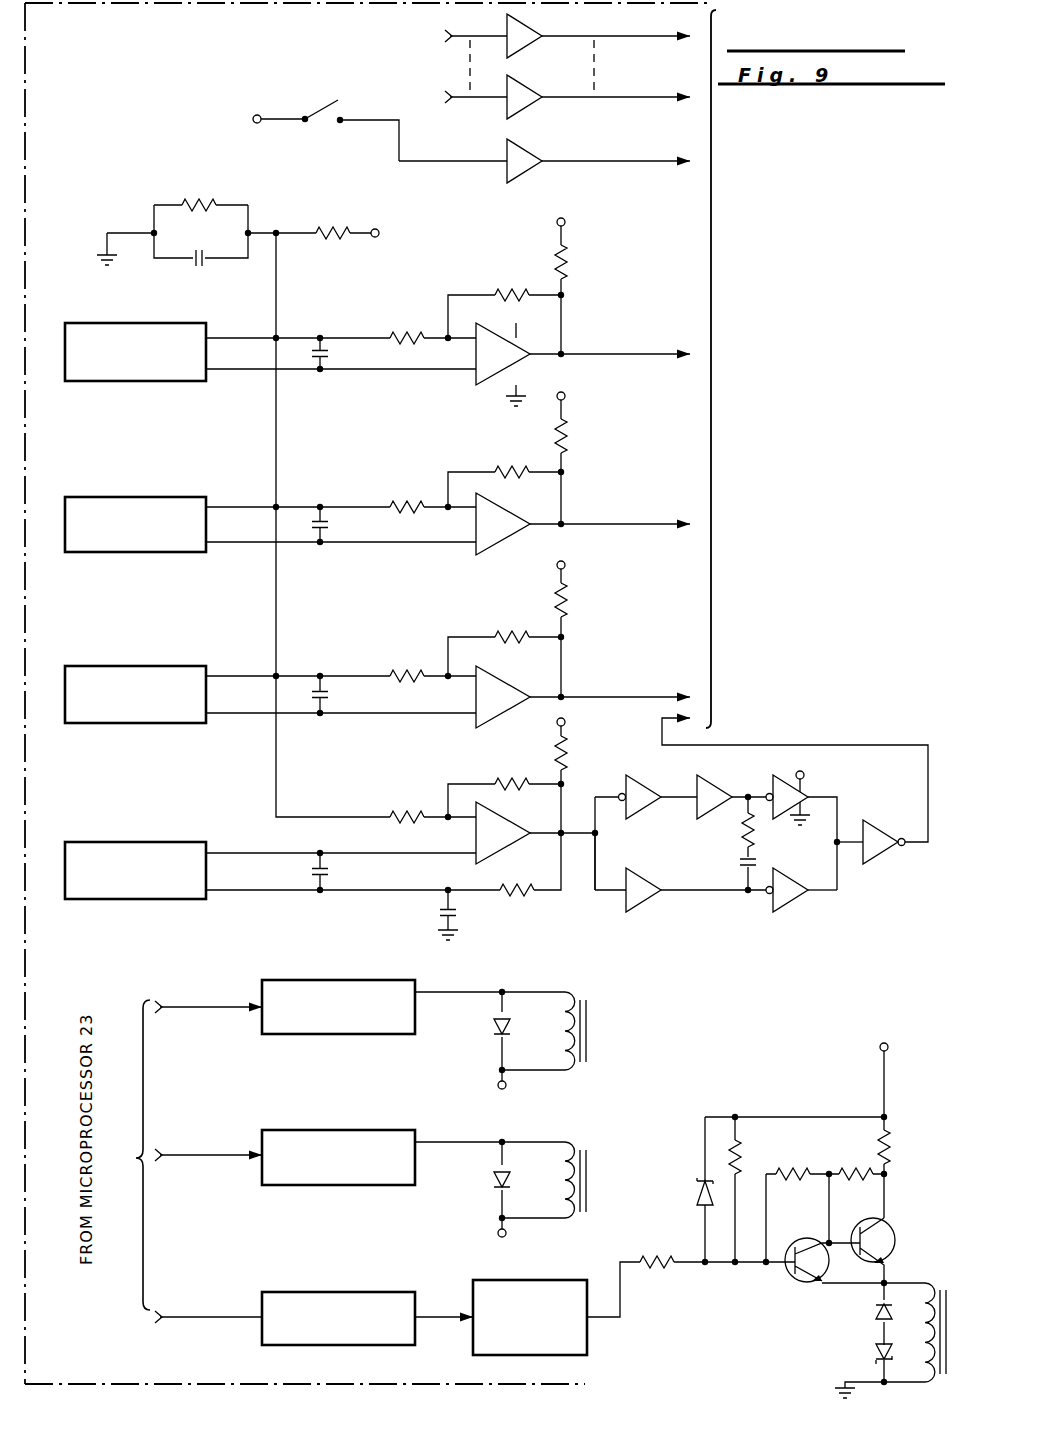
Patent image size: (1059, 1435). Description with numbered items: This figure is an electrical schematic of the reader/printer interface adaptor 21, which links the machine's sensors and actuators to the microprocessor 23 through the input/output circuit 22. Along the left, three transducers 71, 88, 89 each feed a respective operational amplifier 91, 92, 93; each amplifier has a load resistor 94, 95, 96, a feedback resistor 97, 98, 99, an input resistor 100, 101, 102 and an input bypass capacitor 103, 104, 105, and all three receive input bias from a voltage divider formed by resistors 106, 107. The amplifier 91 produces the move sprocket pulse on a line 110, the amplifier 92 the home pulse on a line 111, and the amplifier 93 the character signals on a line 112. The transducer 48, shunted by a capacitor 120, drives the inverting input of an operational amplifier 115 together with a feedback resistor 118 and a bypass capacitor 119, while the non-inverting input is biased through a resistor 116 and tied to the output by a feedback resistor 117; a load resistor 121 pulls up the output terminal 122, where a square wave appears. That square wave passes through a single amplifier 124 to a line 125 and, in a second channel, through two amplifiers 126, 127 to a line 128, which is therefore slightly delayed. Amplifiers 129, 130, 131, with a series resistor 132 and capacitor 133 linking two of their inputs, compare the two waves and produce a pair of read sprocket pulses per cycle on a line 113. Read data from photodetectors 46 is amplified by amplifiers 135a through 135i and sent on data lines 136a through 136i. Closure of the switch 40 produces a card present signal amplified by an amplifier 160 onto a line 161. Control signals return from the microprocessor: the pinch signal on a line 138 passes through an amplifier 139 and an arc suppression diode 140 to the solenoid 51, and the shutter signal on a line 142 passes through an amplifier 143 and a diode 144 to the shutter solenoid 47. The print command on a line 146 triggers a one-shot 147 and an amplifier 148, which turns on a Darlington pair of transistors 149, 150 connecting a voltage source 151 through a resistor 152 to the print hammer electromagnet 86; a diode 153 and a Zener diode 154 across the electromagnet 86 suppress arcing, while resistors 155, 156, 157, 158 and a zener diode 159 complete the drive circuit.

The amplifier 135a is at (540, 36).
The data line 136a is at (652, 27).
The amplifier 135i is at (533, 95).
The data line 136i is at (642, 93).
The amplifier 160 is at (532, 160).
The line 161 is at (599, 160).
The photodetector 46 is at (389, 100).
The switch 40 is at (320, 122).
The resistor 107 is at (205, 192).
The resistor 106 is at (334, 218).
The transducer 89 is at (140, 377).
The input resistor 102 is at (404, 323).
The input bypass capacitor 105 is at (330, 365).
The feedback resistor 99 is at (508, 281).
The load resistor 96 is at (568, 264).
The operational amplifier 93 is at (505, 364).
The line 112 is at (611, 357).
The transducer 88 is at (140, 549).
The input resistor 101 is at (404, 492).
The input bypass capacitor 104 is at (334, 535).
The feedback resistor 98 is at (502, 466).
The load resistor 95 is at (568, 438).
The operational amplifier 92 is at (505, 534).
The line 111 is at (607, 527).
The transducer 71 is at (140, 719).
The input resistor 100 is at (406, 660).
The input bypass capacitor 103 is at (338, 705).
The feedback resistor 97 is at (503, 631).
The load resistor 94 is at (568, 602).
The operational amplifier 91 is at (505, 707).
The line 110 is at (605, 699).
The line 113 is at (662, 743).
The transducer 48 is at (140, 895).
The resistor 116 is at (404, 803).
The capacitor 120 is at (330, 888).
The feedback resistor 117 is at (506, 780).
The load resistor 121 is at (565, 752).
The feedback resistor 118 is at (515, 892).
The bypass capacitor 119 is at (438, 920).
The operational amplifier 115 is at (511, 843).
The output terminal 122 is at (599, 833).
The amplifier 126 is at (655, 775).
The amplifier 127 is at (710, 786).
The line 128 is at (762, 806).
The amplifier 129 is at (810, 786).
The resistor 132 is at (739, 825).
The capacitor 133 is at (740, 863).
The amplifier 124 is at (638, 900).
The line 125 is at (694, 900).
The amplifier 130 is at (792, 904).
The amplifier 131 is at (876, 830).
The microprocessor 23 is at (783, 352).
The input/output circuit 22 is at (104, 1220).
The line 138 is at (207, 1000).
The amplifier 139 is at (346, 968).
The solenoid 51 is at (616, 976).
The arc suppression diode 140 is at (492, 1032).
The line 142 is at (207, 1148).
The amplifier 143 is at (346, 1118).
The shutter solenoid 47 is at (604, 1128).
The arc suppression diode 144 is at (492, 1185).
The line 146 is at (207, 1310).
The monostable multivibrator 147 is at (330, 1285).
The amplifier 148 is at (543, 1346).
The resistor 158 is at (657, 1268).
The reader/printer interface adaptor 21 is at (625, 1379).
The voltage source 151 is at (878, 1050).
The zener diode 159 is at (696, 1178).
The resistor 157 is at (746, 1155).
The resistor 152 is at (877, 1146).
The resistor 156 is at (796, 1162).
The resistor 155 is at (860, 1168).
The transistor 149 is at (794, 1241).
The transistor 150 is at (854, 1224).
The diode 153 is at (871, 1316).
The Zener diode 154 is at (871, 1356).
The print hammer electromagnet 86 is at (948, 1250).